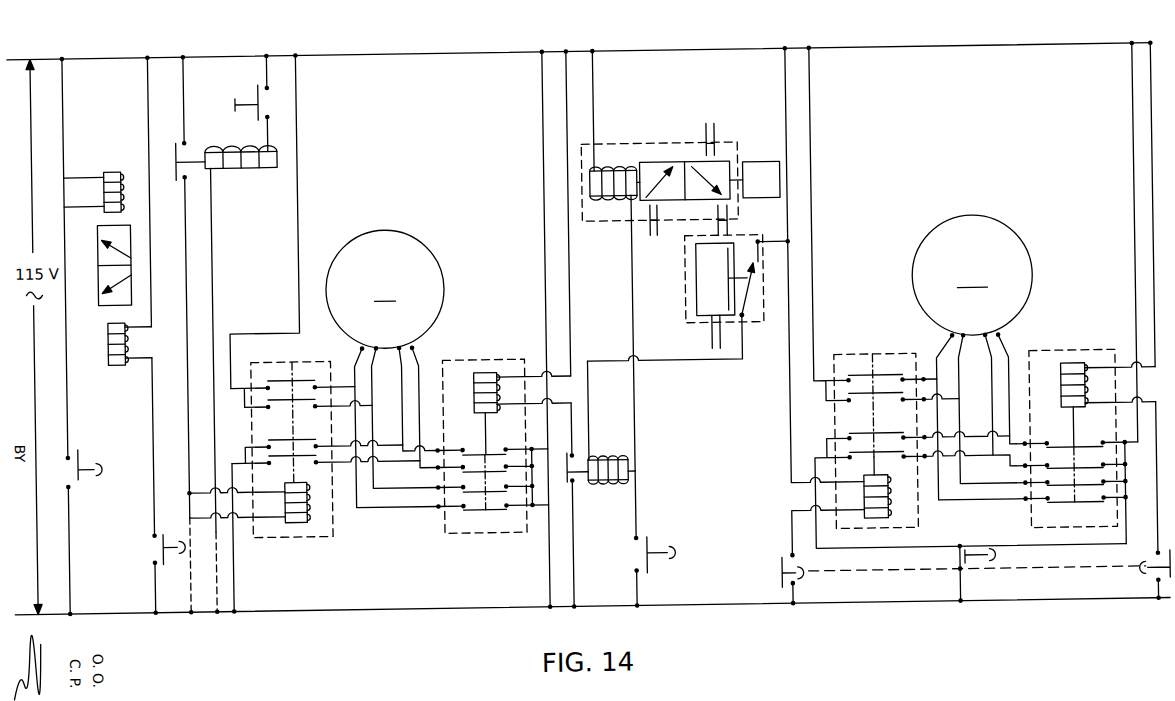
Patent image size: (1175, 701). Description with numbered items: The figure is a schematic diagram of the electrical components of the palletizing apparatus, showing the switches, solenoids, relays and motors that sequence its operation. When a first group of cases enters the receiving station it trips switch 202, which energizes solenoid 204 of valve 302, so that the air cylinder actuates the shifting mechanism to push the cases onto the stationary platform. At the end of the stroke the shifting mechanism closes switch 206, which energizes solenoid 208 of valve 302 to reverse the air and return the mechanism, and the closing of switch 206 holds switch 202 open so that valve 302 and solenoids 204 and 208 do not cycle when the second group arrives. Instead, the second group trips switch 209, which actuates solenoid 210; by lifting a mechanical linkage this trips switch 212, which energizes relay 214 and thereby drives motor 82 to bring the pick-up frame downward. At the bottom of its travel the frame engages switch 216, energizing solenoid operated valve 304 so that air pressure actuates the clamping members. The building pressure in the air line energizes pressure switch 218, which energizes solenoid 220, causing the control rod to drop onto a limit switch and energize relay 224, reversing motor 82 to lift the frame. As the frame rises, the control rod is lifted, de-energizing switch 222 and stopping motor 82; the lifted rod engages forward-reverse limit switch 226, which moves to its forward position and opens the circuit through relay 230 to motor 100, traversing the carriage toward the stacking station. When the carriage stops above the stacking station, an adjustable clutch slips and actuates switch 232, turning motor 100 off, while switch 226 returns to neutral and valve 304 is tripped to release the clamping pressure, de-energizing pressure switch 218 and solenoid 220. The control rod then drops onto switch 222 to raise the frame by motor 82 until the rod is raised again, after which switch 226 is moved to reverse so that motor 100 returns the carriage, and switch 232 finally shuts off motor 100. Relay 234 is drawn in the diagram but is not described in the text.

The motor 82 is at (386, 368).
The motor 100 is at (973, 357).
The switch 202 is at (78, 464).
The solenoid 204 is at (113, 173).
The switch 206 is at (160, 540).
The solenoid 208 is at (112, 368).
The switch 209 is at (249, 99).
The solenoid 210 is at (240, 178).
The switch 212 is at (184, 155).
The relay 214 is at (263, 543).
The switch 216 is at (645, 557).
The pressure switch 218 is at (680, 316).
The solenoid 220 is at (623, 475).
The switch 222 is at (569, 488).
The relay 224 is at (440, 543).
The forward-reverse limit switch 226 is at (778, 573).
The relay 230 is at (884, 362).
The switch 232 is at (961, 578).
The reversing relay 234 is at (1053, 362).
The valve 302 is at (93, 285).
The solenoid operated valve 304 is at (661, 170).